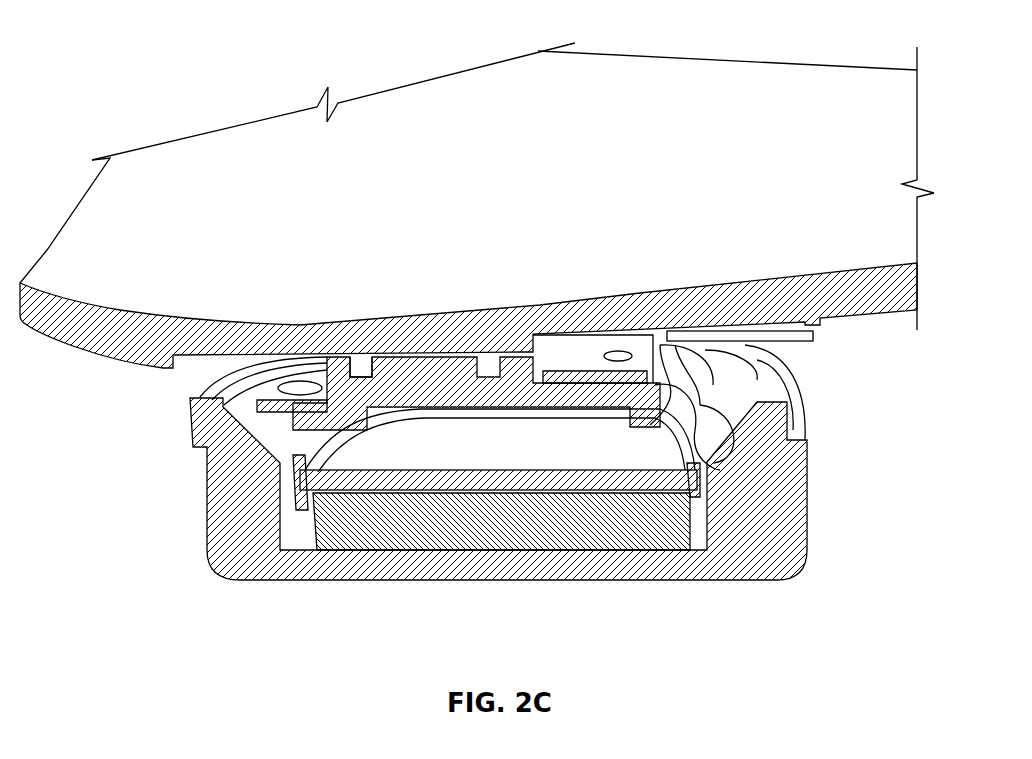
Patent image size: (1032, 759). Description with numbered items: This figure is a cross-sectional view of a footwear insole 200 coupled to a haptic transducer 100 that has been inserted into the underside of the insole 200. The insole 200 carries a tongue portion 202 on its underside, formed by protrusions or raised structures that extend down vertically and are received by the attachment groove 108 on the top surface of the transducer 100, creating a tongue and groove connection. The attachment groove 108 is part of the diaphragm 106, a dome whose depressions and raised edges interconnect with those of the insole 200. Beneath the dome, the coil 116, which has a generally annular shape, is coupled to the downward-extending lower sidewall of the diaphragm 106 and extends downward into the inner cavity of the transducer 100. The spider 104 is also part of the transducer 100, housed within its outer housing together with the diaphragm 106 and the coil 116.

The insole 200 is at (206, 56).
The attachment groove 108 is at (338, 366).
The tongue portion 202 is at (358, 356).
The spider 104 is at (700, 386).
The diaphragm 106 is at (660, 420).
The coil 116 is at (279, 465).
The haptic transducer 100 is at (370, 600).